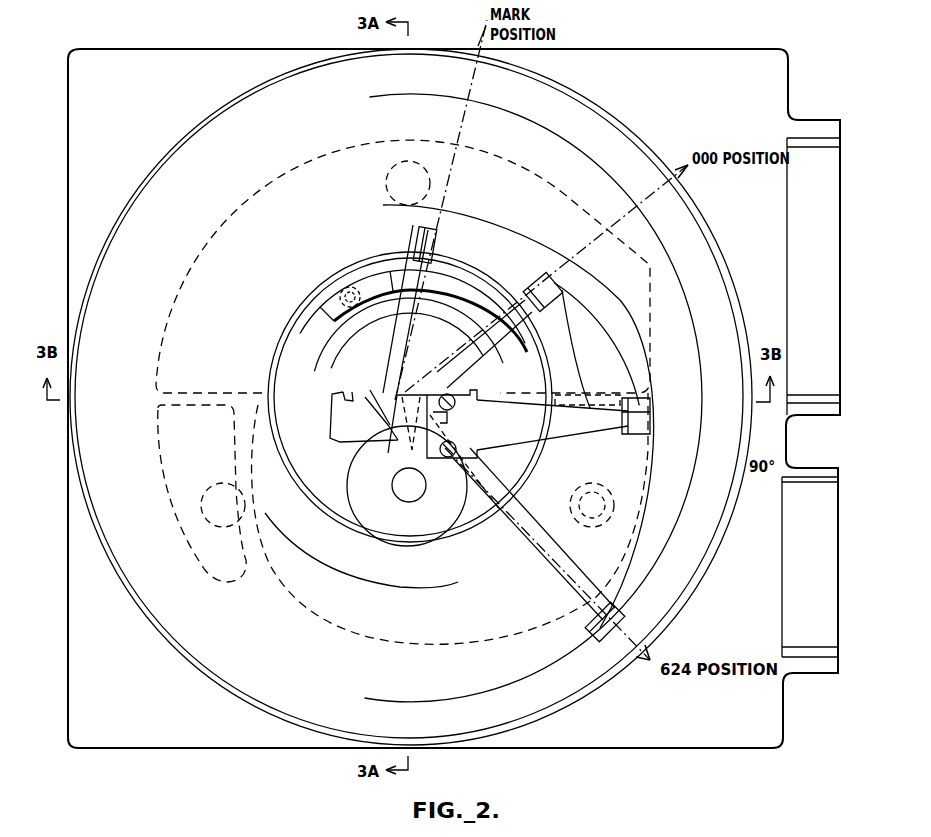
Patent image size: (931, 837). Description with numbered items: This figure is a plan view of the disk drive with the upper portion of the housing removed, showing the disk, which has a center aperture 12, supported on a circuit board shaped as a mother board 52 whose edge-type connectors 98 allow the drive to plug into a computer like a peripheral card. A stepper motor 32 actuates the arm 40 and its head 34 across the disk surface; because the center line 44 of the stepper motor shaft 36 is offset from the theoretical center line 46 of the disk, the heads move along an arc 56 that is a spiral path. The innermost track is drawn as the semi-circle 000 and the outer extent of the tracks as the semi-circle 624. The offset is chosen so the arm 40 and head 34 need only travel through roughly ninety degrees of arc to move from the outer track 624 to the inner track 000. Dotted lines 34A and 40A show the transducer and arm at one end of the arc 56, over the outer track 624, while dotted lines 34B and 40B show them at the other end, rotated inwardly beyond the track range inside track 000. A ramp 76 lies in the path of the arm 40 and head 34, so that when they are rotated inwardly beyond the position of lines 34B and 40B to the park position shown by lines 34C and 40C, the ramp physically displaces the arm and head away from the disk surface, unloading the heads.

The center aperture 12 is at (318, 488).
The stepper motor 32 is at (283, 376).
The head 34 is at (628, 398).
The transducer position at outer track 34A is at (588, 638).
The transducer position inward of inner track 34B is at (544, 310).
The transducer park position 34C is at (452, 224).
The stepper motor shaft 36 is at (408, 500).
The arm 40 is at (527, 445).
The arm position at outer track 40A is at (556, 596).
The arm position inward of inner track 40B is at (548, 272).
The arm park position 40C is at (380, 336).
The center line of stepper motor shaft 44 is at (404, 485).
The center line of disk 46 is at (400, 396).
The mother board 52 is at (737, 731).
The arc 56 is at (655, 479).
The ramp 76 is at (489, 294).
The edge-type connectors 98 is at (830, 311).
The outer track semi-circle 624 is at (398, 98).
The inner track semi-circle 000 is at (390, 212).